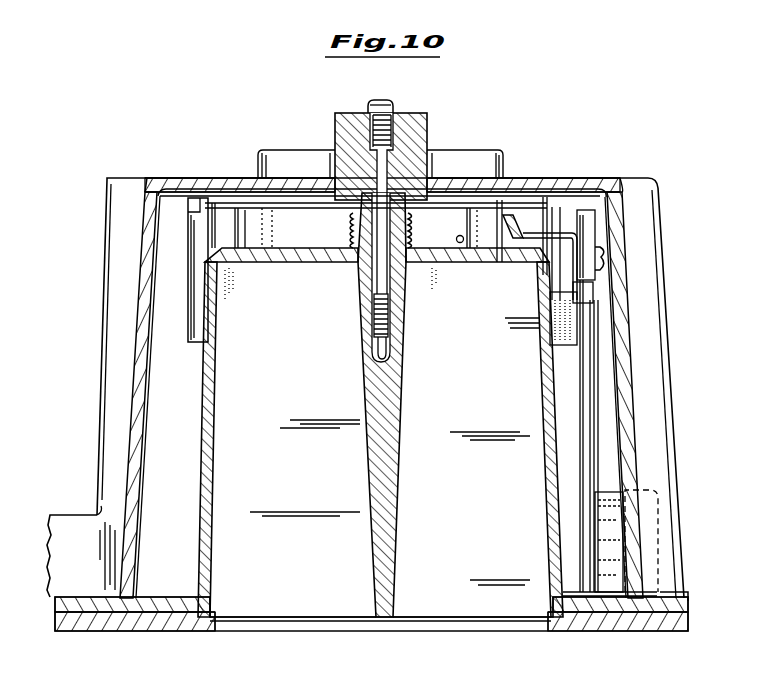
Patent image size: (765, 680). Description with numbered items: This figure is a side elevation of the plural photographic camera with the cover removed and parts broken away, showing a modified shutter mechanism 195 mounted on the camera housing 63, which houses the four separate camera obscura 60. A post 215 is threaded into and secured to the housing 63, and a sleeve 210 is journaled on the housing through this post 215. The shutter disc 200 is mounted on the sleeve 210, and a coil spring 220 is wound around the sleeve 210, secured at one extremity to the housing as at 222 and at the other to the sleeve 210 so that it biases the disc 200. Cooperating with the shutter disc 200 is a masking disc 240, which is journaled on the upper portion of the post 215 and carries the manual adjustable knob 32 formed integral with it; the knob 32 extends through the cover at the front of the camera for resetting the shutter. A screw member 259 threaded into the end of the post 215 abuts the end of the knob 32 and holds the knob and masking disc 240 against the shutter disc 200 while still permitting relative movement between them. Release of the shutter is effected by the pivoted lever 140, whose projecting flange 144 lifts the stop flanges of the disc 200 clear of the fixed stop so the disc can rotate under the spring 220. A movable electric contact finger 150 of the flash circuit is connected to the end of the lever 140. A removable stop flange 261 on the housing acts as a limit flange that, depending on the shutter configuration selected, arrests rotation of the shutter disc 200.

The screw member 259 is at (388, 107).
The manual adjustable knob 32 is at (427, 134).
The shutter mechanism 195 is at (256, 165).
The shutter disc 200 is at (213, 177).
The masking disc 240 is at (515, 215).
The movable electric contact finger 150 is at (553, 205).
The projecting flange 144 is at (572, 205).
The pivoted lever 140 is at (595, 246).
The removable stop flange 261 is at (192, 280).
The camera obscura 60 is at (295, 240).
The coil spring 220 is at (345, 232).
The sleeve 210 is at (373, 292).
The post 215 is at (408, 270).
The spring securing point 222 is at (462, 243).
The camera housing 63 is at (402, 380).